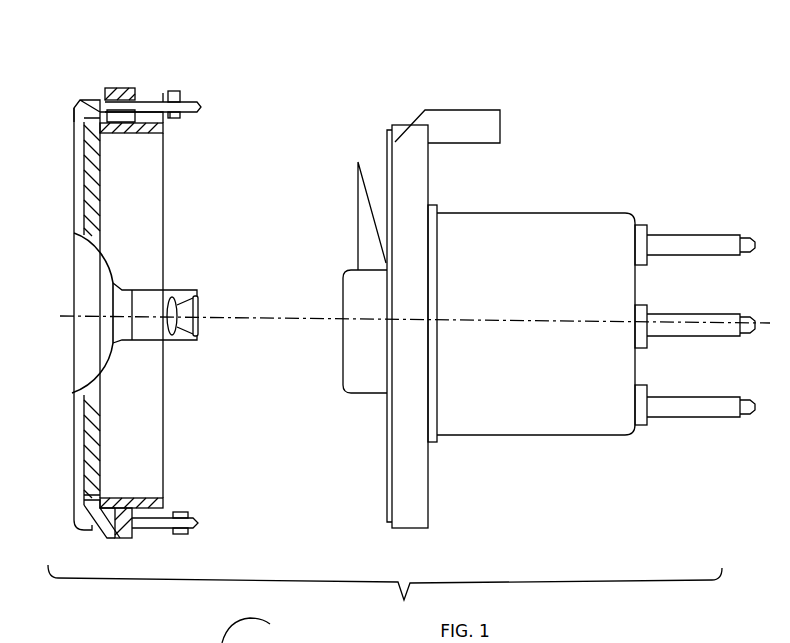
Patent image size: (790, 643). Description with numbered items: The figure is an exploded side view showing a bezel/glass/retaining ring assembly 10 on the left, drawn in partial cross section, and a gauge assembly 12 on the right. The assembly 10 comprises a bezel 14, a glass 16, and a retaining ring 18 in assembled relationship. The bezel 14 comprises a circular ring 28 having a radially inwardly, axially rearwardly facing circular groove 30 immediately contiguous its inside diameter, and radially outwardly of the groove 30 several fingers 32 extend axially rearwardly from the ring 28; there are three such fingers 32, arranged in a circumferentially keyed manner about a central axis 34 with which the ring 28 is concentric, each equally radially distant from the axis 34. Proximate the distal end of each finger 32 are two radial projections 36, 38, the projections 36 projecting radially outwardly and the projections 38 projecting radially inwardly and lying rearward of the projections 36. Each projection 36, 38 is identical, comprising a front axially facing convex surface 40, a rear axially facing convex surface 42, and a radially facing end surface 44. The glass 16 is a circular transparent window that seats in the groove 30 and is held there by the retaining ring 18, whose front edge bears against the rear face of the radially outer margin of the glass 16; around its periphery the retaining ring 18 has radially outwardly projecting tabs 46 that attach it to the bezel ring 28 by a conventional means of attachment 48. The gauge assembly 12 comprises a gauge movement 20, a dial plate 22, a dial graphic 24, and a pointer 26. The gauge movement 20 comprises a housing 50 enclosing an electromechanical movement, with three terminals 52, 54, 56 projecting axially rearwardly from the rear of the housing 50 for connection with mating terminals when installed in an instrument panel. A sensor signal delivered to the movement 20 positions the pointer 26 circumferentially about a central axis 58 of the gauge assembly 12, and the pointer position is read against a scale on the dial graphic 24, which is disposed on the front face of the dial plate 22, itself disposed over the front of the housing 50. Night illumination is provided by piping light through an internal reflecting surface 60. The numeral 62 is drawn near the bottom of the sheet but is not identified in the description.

The bezel/glass/retaining ring assembly 10 is at (74, 465).
The gauge assembly 12 is at (632, 212).
The bezel 14 is at (78, 112).
The glass 16 is at (96, 185).
The retaining ring 18 is at (166, 208).
The gauge movement 20 is at (536, 212).
The dial plate 22 is at (432, 508).
The dial graphic 24 is at (386, 490).
The pointer 26 is at (358, 162).
The circular ring 28 is at (90, 526).
The circular groove 30 is at (98, 118).
The fingers 32 is at (152, 101).
The central axis 34 is at (233, 312).
The radial projections 36 is at (180, 91).
The radial projections 38 is at (186, 118).
The front axially facing convex surface 40 is at (163, 92).
The rear axially facing convex surface 42 is at (185, 92).
The radially facing end surface 44 is at (182, 324).
The tabs 46 is at (106, 88).
The means of attachment 48 is at (157, 133).
The housing 50 is at (597, 245).
The terminal 52 is at (706, 245).
The terminal 54 is at (700, 322).
The terminal 56 is at (705, 400).
The central axis 58 is at (330, 318).
The internal reflecting surface 60 is at (424, 110).
The cable 62 is at (259, 630).